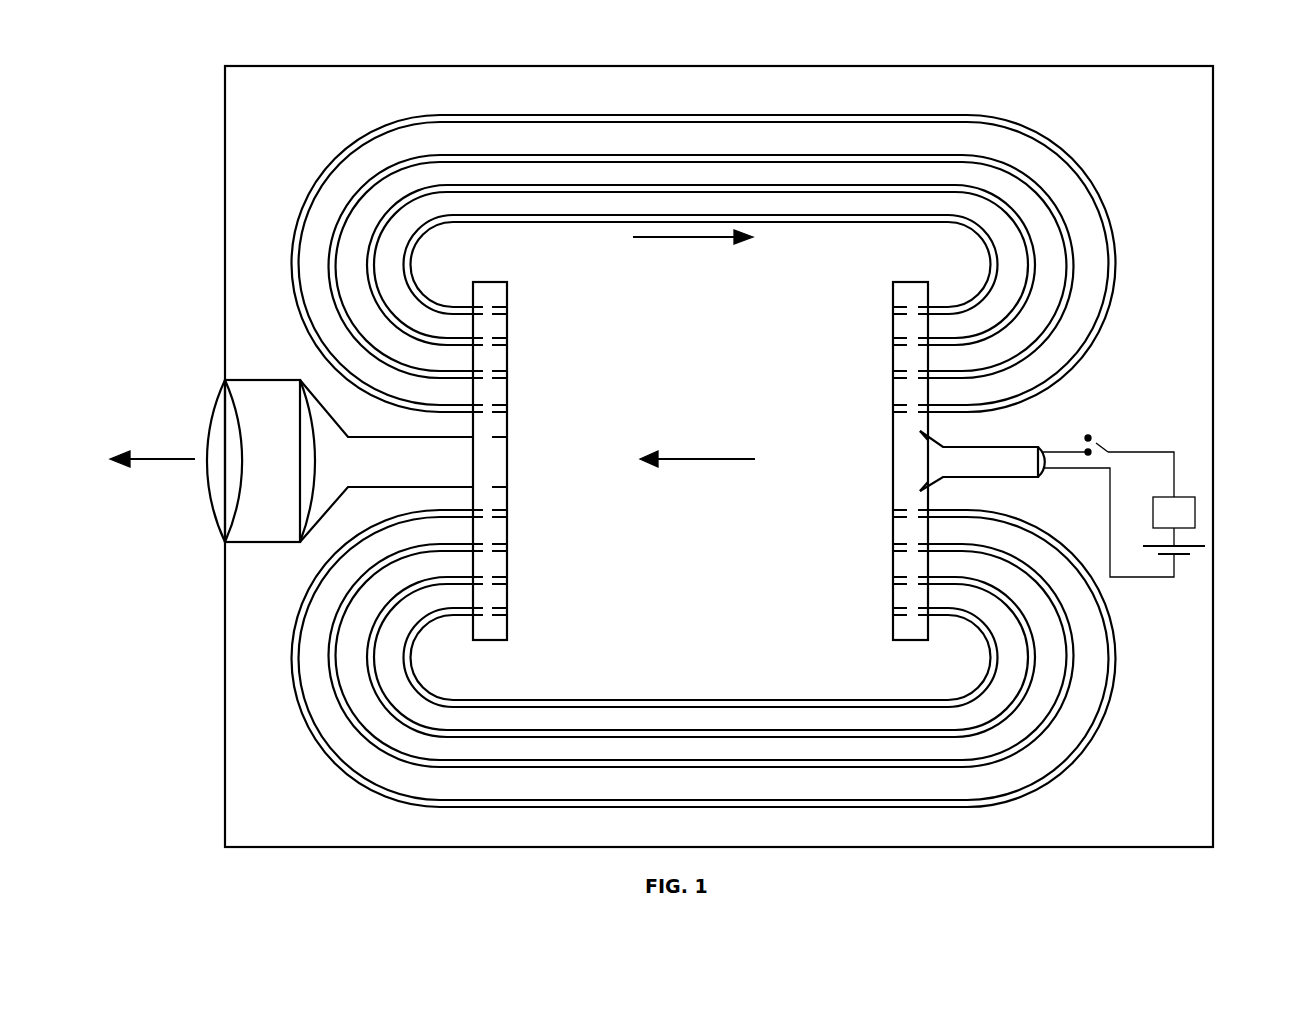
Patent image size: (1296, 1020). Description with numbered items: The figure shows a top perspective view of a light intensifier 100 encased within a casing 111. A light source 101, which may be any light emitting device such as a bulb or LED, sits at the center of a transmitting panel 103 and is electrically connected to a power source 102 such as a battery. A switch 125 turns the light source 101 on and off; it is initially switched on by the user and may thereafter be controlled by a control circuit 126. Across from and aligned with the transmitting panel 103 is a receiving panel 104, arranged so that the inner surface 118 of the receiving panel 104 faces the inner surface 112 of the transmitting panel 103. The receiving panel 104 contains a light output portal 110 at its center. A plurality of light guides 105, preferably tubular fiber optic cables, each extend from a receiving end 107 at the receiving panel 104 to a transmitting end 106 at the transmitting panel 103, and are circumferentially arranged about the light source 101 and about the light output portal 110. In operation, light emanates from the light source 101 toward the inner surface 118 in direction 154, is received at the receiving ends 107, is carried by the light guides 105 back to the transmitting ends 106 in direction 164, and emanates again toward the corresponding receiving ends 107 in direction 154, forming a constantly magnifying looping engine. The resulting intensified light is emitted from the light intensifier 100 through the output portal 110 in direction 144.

The light intensifier 100 is at (280, 35).
The light source 101 is at (1010, 457).
The power source 102 is at (1183, 556).
The transmitting panel 103 is at (912, 394).
The receiving panel 104 is at (498, 399).
The light guides 105 is at (830, 115).
The transmitting end 106 is at (957, 405).
The receiving end 107 is at (456, 400).
The light output portal 110 is at (270, 380).
The casing 111 is at (224, 83).
The inner surface of the transmitting panel 112 is at (912, 565).
The inner surface of the receiving panel 118 is at (508, 562).
The switch 125 is at (1096, 443).
The control circuit 126 is at (1195, 512).
The direction of emitted light 144 is at (153, 459).
The direction of light toward receiving panel 154 is at (718, 459).
The direction of light transmission in light guides 164 is at (673, 237).